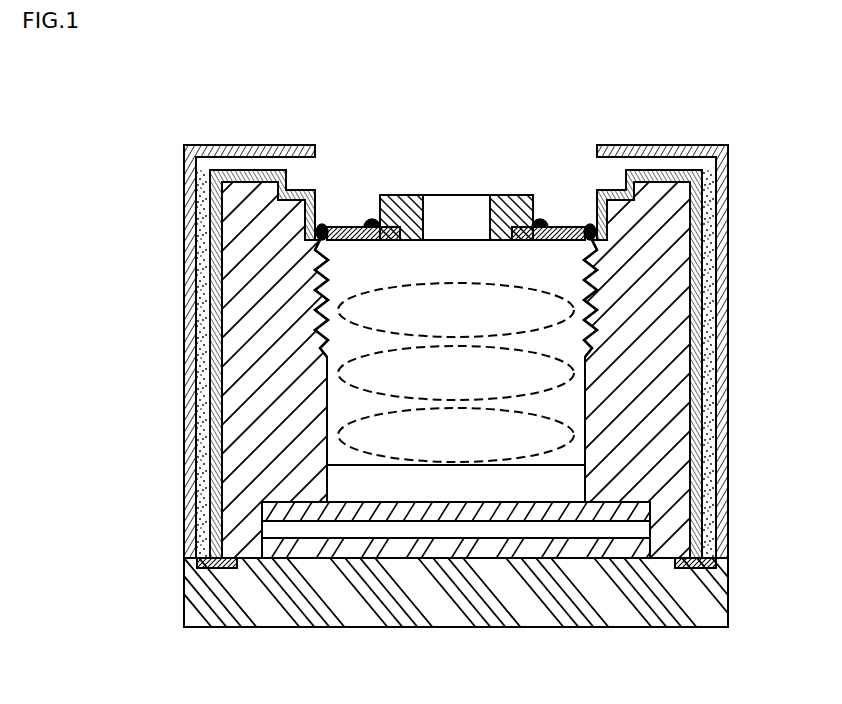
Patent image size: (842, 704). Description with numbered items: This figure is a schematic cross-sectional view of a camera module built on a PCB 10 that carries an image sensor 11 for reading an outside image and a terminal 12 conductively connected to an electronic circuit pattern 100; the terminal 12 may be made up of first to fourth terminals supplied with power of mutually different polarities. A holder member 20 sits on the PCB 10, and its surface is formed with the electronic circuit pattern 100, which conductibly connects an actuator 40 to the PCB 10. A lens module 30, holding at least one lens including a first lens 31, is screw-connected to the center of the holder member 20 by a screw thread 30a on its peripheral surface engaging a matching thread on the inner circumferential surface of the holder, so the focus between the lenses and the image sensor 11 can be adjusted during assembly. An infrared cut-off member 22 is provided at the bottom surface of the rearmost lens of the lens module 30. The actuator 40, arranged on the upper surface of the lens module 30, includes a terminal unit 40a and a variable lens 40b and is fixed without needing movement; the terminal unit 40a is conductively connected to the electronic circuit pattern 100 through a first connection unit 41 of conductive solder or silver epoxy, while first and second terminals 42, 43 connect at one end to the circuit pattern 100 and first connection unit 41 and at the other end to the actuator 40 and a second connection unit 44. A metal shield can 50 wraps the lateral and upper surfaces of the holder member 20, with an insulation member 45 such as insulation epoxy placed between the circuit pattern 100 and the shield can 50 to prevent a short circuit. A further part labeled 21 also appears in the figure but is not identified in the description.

The PCB 10 is at (374, 598).
The image sensor 11 is at (485, 548).
The terminal 12 is at (210, 577).
The holder member 20 is at (237, 512).
The holder reinforcing member 21 is at (265, 181).
The infrared cut-off member 22 is at (608, 510).
The lens module 30 is at (590, 437).
The screw thread 30a is at (592, 298).
The first lens 31 is at (572, 300).
The actuator 40 is at (493, 105).
The terminal unit 40a is at (395, 213).
The variable lens 40b is at (470, 197).
The first connection unit 41 is at (322, 226).
The first terminal 42 is at (372, 220).
The second terminal 43 is at (590, 226).
The second connection unit 44 is at (540, 220).
The insulation member 45 is at (205, 308).
The shield can 50 is at (656, 146).
The electronic circuit pattern 100 is at (212, 385).